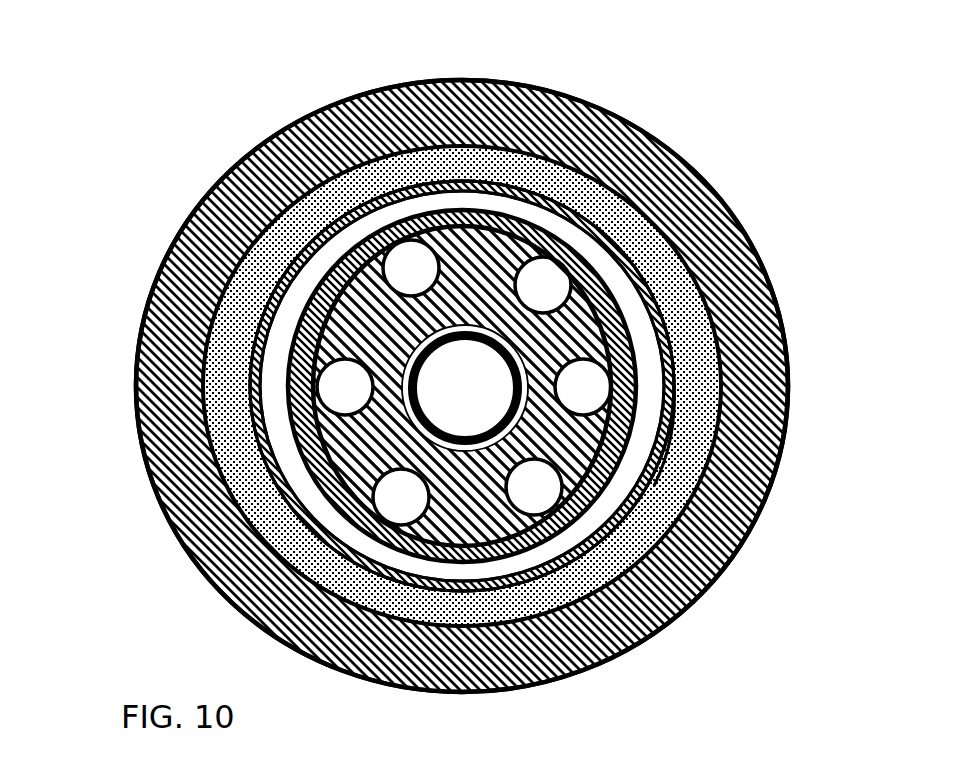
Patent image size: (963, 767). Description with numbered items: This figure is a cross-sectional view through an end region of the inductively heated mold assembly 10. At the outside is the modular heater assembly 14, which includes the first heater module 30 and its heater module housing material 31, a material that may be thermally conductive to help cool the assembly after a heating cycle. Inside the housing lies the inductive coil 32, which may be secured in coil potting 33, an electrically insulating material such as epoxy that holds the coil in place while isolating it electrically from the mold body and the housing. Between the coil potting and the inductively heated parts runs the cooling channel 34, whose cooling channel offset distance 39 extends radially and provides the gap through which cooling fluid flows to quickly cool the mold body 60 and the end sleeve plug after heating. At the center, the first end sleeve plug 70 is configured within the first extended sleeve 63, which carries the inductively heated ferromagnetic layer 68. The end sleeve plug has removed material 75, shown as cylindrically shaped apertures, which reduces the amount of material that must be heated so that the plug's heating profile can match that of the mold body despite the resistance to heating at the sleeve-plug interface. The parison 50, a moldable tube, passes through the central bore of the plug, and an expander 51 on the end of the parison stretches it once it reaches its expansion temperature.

The inductively heated mold assembly 10 is at (262, 112).
The modular heater assembly 14 is at (748, 302).
The removed material apertures 75 is at (400, 175).
The first end sleeve plug 70 is at (462, 148).
The parison 50 is at (645, 532).
The expander 51 is at (612, 470).
The inductive coil 32 is at (592, 212).
The coil potting 33 is at (608, 240).
The cooling channel 34 is at (648, 262).
The first heater module 30 is at (700, 262).
The heater module housing material 31 is at (718, 282).
The cooling channel offset distance 39 is at (672, 383).
The mold body 60 is at (375, 305).
The first extended sleeve 63 is at (290, 338).
The ferromagnetic layer 68 is at (250, 370).